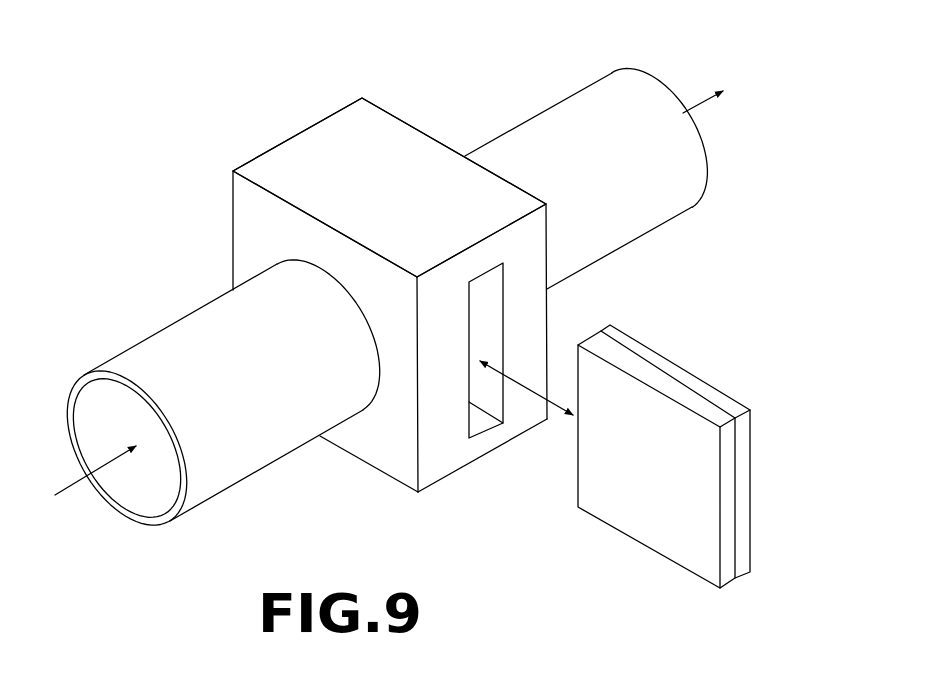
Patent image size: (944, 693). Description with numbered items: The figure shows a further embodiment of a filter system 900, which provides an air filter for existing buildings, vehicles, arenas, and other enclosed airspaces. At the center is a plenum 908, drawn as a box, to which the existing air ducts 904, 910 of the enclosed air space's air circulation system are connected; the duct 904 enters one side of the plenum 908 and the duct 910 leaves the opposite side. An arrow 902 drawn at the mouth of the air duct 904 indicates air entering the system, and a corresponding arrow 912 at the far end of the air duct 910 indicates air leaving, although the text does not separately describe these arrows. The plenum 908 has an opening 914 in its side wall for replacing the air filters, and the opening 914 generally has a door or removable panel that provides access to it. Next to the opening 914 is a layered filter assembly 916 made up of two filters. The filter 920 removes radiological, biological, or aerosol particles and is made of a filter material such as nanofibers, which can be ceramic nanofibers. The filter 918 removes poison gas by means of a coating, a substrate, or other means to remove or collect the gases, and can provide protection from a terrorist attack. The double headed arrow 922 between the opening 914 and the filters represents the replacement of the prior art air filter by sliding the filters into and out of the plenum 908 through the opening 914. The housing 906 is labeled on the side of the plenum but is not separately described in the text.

The filter system 900 is at (274, 79).
The input light 902 is at (73, 485).
The air duct 904 is at (300, 365).
The housing 906 is at (256, 227).
The plenum 908 is at (390, 183).
The air duct 910 is at (622, 167).
The output light 912 is at (697, 107).
The opening 914 is at (488, 333).
The filter assembly 916 is at (687, 482).
The filter 918 is at (710, 392).
The filter 920 is at (662, 527).
The double headed arrow 922 is at (529, 390).